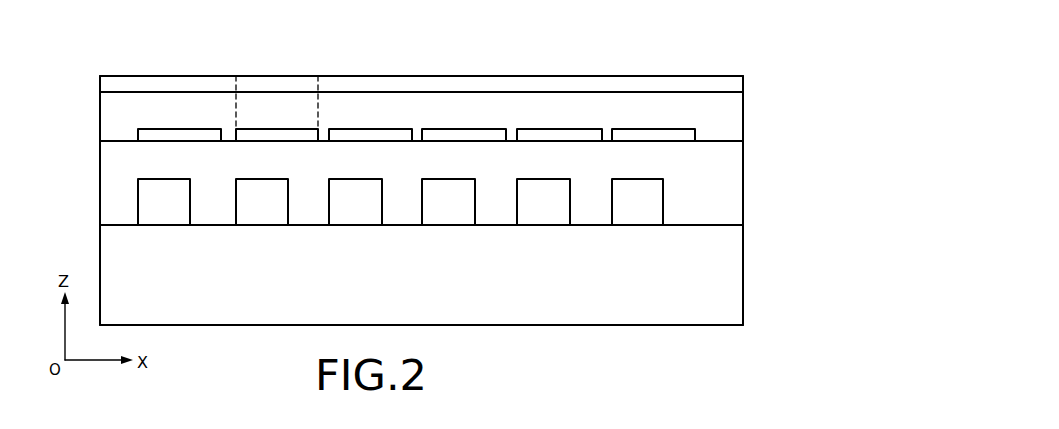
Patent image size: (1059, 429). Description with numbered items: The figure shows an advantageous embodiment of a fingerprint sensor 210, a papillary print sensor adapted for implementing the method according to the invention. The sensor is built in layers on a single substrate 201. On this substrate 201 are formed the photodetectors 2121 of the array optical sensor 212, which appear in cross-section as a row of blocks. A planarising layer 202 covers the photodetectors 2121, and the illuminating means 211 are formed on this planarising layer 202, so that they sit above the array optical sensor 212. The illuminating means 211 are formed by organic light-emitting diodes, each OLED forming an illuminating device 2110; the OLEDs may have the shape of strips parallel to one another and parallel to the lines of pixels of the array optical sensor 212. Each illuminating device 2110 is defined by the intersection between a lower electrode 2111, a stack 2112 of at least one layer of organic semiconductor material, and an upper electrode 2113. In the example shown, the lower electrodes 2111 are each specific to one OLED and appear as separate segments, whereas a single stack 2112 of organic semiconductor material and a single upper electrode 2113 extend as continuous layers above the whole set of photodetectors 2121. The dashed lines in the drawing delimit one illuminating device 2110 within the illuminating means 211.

The fingerprint sensor 210 is at (802, 73).
The illuminating means 211 is at (762, 118).
The array optical sensor 212 is at (765, 207).
The substrate 201 is at (730, 263).
The planarising layer 202 is at (730, 155).
The illuminating device 2110 is at (258, 65).
The lower electrode 2111 is at (632, 132).
The stack 2112 is at (707, 102).
The upper electrode 2113 is at (397, 82).
The photodetectors 2121 is at (633, 215).